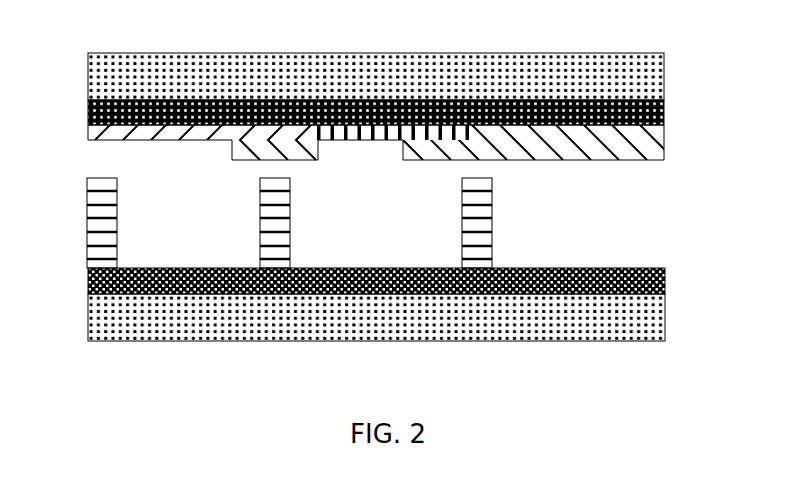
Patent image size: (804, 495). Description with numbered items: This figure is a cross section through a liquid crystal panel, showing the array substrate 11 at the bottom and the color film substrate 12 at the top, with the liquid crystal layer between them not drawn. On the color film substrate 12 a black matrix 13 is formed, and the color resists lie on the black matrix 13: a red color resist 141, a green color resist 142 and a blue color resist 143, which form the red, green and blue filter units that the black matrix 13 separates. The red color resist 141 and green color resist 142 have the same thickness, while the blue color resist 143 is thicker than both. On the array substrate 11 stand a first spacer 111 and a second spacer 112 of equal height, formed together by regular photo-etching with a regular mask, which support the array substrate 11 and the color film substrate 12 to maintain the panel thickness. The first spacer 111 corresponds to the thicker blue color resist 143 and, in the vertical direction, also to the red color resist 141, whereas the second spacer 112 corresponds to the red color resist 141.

The array substrate 11 is at (631, 343).
The first spacer 111 is at (290, 232).
The second spacer 112 is at (117, 232).
The color film substrate 12 is at (632, 53).
The black matrix 13 is at (665, 110).
The red color resist 141 is at (88, 131).
The green color resist 142 is at (372, 128).
The blue color resist 143 is at (665, 150).